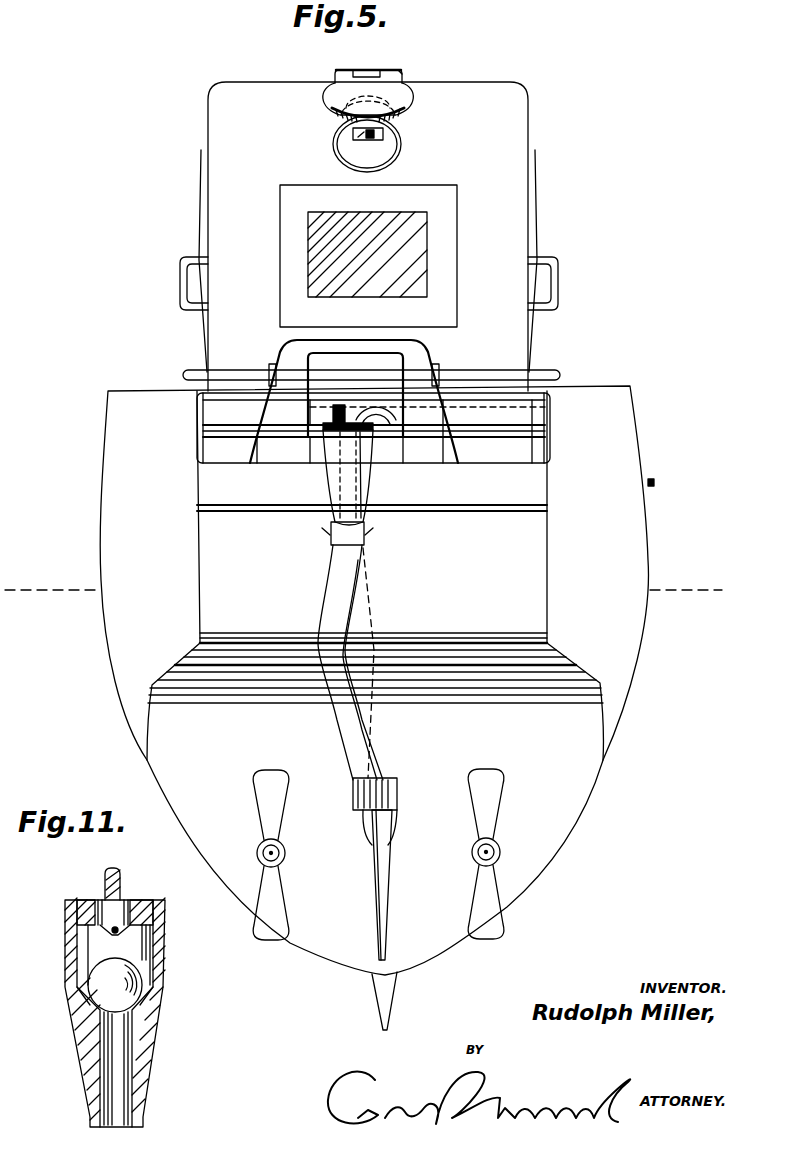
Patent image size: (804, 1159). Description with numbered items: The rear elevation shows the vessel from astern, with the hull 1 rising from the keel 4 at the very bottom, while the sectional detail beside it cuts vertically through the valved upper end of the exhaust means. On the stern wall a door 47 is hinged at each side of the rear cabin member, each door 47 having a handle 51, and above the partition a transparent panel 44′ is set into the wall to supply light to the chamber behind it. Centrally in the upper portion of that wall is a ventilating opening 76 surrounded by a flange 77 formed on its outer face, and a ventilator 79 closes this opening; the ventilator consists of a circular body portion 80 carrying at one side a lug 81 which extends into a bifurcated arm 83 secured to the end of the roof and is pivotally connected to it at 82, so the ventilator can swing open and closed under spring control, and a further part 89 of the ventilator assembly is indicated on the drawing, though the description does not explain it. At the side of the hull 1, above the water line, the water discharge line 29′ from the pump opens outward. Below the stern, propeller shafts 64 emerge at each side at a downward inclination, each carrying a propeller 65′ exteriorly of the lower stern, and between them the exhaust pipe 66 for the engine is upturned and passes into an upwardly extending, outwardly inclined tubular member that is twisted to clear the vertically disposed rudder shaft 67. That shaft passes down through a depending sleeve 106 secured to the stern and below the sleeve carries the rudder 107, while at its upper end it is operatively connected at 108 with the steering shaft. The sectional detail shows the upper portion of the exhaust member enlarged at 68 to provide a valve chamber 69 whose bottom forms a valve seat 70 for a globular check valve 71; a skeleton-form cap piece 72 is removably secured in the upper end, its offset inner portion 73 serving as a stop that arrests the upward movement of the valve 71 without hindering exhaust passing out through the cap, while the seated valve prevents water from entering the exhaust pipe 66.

In FIG. 5, the hull 1 is at (636, 432).
In FIG. 5, the keel 4 is at (392, 990).
In FIG. 5, the water discharge line 29′ is at (654, 480).
In FIG. 5, the transparent panel 44′ is at (414, 245).
In FIG. 5, the door 47 is at (201, 218).
In FIG. 5, the handle 51 is at (183, 262).
In FIG. 5, the propeller shaft 64 is at (272, 853).
In FIG. 5, the propeller 65′ is at (276, 818).
In FIG. 5, the exhaust pipe 66 is at (335, 706).
In FIG. 5, the rudder shaft 67 is at (374, 600).
In FIG. 5, the enlarged upper portion 68 is at (370, 440).
In FIG. 11, the enlarged upper portion 68 is at (165, 955).
In FIG. 11, the valve chamber 69 is at (140, 936).
In FIG. 11, the valve seat 70 is at (95, 1005).
In FIG. 11, the check valve 71 is at (105, 980).
In FIG. 5, the cap piece 72 is at (330, 420).
In FIG. 11, the cap piece 72 is at (141, 904).
In FIG. 11, the offset inner portion 73 is at (110, 932).
In FIG. 5, the ventilating opening 76 is at (388, 137).
In FIG. 5, the flange 77 is at (338, 132).
In FIG. 5, the ventilator 79 is at (414, 101).
In FIG. 5, the circular body portion 80 is at (332, 95).
In FIG. 5, the lug 81 is at (367, 70).
In FIG. 5, the pivotal connection 82 is at (398, 70).
In FIG. 5, the bifurcated arm 83 is at (342, 70).
In FIG. 5, the lever 89 is at (362, 138).
In FIG. 5, the depending sleeve 106 is at (392, 755).
In FIG. 5, the rudder 107 is at (385, 880).
In FIG. 5, the operative connection 108 is at (393, 414).